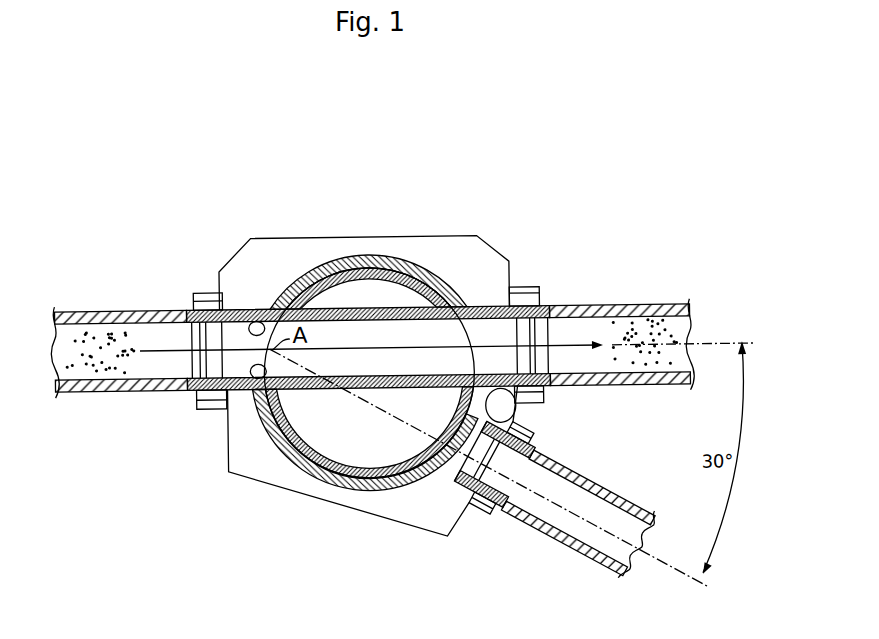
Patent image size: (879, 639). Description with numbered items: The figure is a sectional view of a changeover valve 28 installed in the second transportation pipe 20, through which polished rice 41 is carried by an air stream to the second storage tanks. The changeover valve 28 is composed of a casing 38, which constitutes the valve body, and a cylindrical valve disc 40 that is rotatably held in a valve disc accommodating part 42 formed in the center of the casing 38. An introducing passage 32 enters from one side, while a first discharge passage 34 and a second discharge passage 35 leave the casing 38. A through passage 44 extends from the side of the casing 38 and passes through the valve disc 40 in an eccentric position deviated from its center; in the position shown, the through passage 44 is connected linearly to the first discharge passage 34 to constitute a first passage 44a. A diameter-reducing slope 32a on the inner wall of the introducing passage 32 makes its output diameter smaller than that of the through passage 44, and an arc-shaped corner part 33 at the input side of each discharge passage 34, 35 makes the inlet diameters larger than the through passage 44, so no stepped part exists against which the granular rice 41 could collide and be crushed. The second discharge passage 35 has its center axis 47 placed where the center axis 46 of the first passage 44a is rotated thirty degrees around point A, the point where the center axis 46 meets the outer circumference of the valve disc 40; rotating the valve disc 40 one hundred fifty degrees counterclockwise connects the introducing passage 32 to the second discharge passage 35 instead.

The second transportation pipe 20 is at (87, 309).
The changeover valve 28 is at (369, 361).
The introducing passage 32 is at (188, 321).
The diameter-reducing slope 32a is at (262, 307).
The arc-shaped corner part 33 is at (484, 307).
The first discharge passage 34 is at (561, 322).
The second discharge passage 35 is at (512, 500).
The casing 38 is at (458, 236).
The valve disc 40 is at (357, 290).
The rice 41 is at (672, 334).
The valve disc accommodating part 42 is at (340, 458).
The through passage 44 is at (384, 375).
The first passage 44a is at (392, 305).
The center axis of the first passage 46 is at (342, 316).
The center axis of the second discharge passage 47 is at (403, 428).